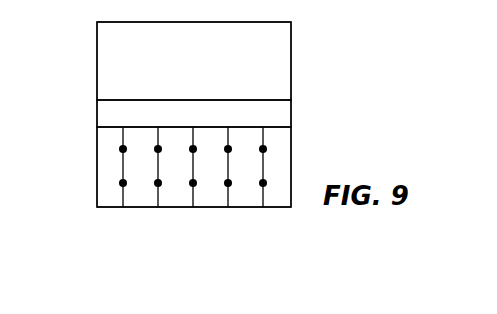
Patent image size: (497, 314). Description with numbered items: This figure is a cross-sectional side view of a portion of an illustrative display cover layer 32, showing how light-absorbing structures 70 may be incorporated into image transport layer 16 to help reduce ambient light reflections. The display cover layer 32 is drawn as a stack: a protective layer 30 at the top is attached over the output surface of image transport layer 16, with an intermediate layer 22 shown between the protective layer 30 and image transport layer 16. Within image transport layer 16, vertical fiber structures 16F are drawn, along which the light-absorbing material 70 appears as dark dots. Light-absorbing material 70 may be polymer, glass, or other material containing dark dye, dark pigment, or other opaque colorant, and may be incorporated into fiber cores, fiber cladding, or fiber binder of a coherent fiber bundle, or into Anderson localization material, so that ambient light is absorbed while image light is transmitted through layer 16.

The display cover layer 32 is at (63, 20).
The protective layer 30 is at (282, 62).
The intermediate layer 22 is at (282, 113).
The image transport layer 16 is at (298, 127).
The fingers 16F is at (137, 196).
The light-absorbing structures 70 is at (119, 150).